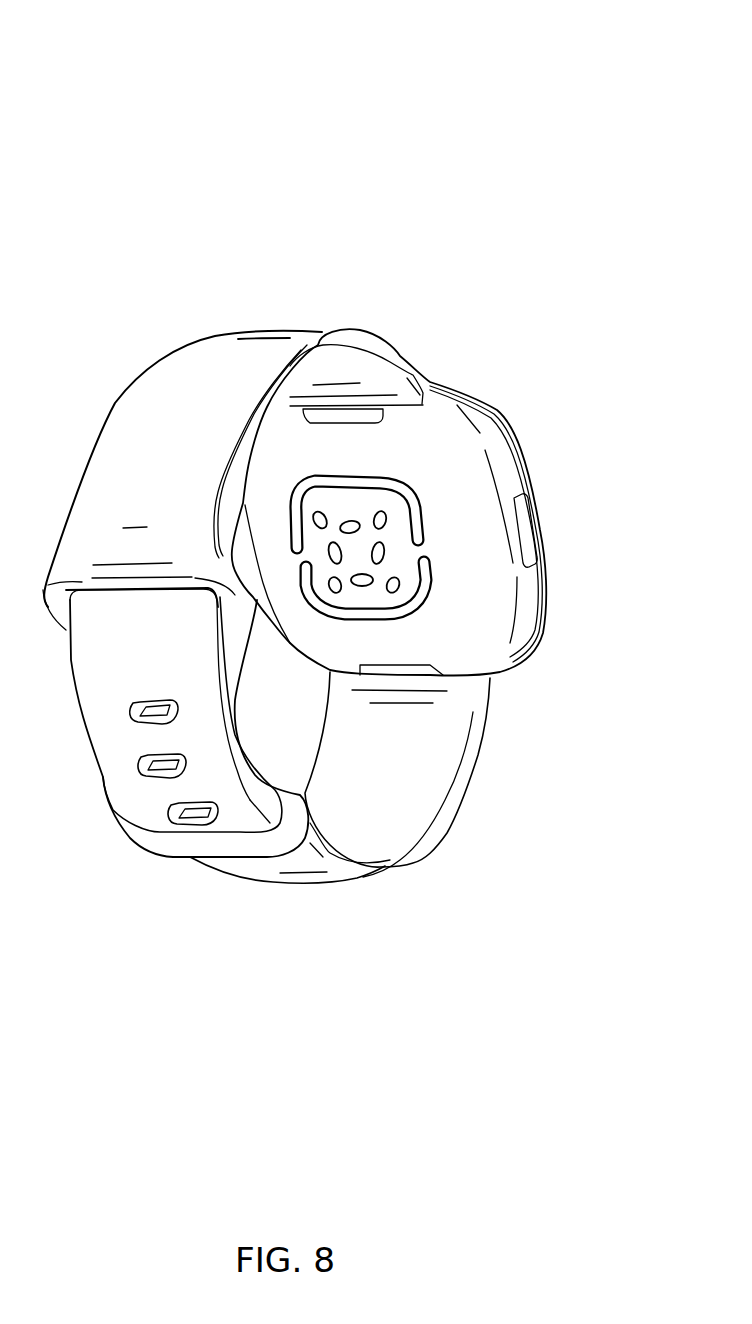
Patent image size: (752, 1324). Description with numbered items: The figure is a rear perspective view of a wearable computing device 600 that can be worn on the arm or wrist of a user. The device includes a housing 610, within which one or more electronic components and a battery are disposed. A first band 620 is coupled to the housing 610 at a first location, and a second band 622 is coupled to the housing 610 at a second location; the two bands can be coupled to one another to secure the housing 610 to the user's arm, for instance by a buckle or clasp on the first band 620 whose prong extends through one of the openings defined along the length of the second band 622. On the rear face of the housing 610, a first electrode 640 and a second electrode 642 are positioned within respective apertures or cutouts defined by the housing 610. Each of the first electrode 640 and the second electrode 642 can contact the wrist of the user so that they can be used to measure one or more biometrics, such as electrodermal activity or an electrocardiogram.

The wearable computing device 600 is at (569, 80).
The housing 610 is at (470, 386).
The first band 620 is at (248, 330).
The second band 622 is at (462, 793).
The first electrode 640 is at (427, 517).
The second electrode 642 is at (439, 572).